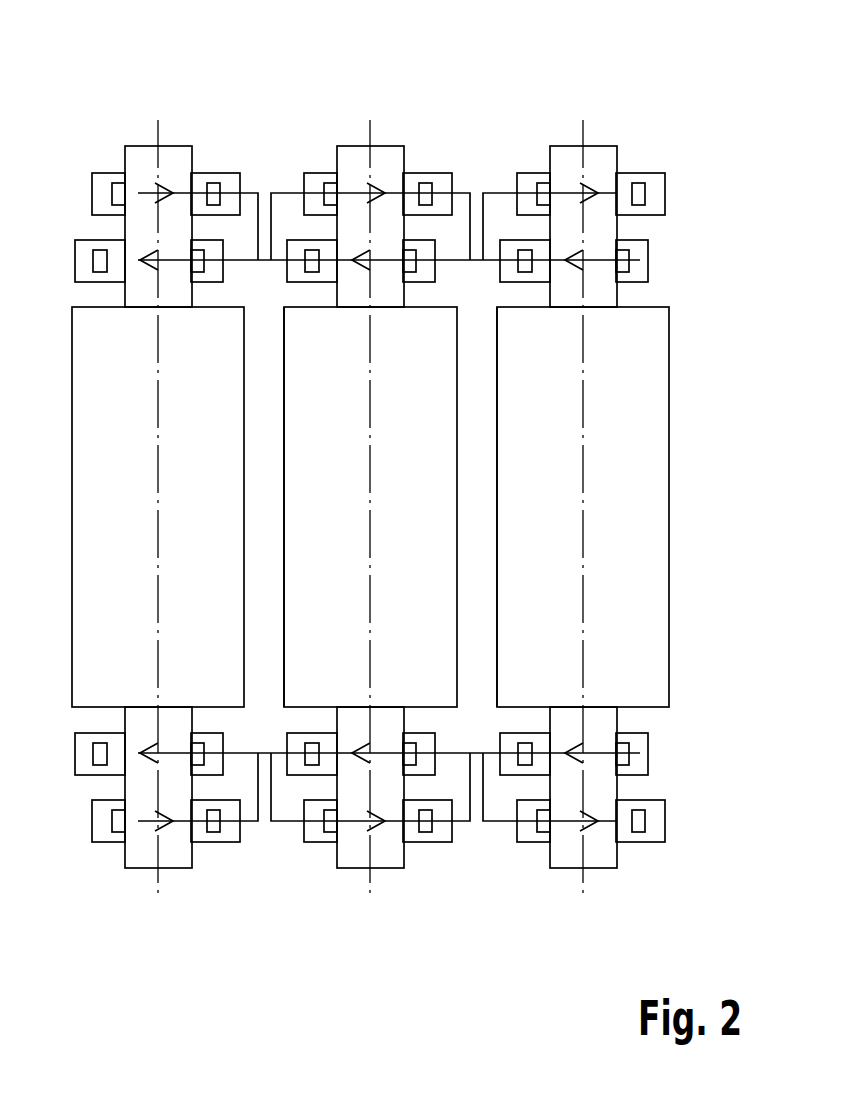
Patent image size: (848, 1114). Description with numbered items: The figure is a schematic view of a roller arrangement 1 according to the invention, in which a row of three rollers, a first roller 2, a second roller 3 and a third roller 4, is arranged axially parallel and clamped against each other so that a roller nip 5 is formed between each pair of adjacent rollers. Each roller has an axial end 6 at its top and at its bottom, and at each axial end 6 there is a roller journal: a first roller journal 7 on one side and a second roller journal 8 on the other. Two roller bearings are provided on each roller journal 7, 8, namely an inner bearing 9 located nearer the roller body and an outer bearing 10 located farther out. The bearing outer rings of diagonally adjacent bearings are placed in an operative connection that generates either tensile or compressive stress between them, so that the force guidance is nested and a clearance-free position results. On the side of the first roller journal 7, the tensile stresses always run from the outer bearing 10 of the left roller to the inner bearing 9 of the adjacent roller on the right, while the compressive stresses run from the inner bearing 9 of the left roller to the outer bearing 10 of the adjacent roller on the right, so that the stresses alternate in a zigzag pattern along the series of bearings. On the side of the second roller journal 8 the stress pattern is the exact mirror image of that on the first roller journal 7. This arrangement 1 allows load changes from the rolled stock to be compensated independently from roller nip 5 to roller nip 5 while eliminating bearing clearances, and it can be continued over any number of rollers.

The arrangement 1 is at (673, 63).
The first roller 2 is at (98, 467).
The second roller 3 is at (325, 467).
The third roller 4 is at (537, 467).
The roller nip 5 is at (262, 398).
The axial end 6 is at (373, 500).
The first roller journal 7 is at (140, 170).
The second roller journal 8 is at (140, 845).
The inner bearing 9 is at (90, 262).
The outer bearing 10 is at (108, 192).